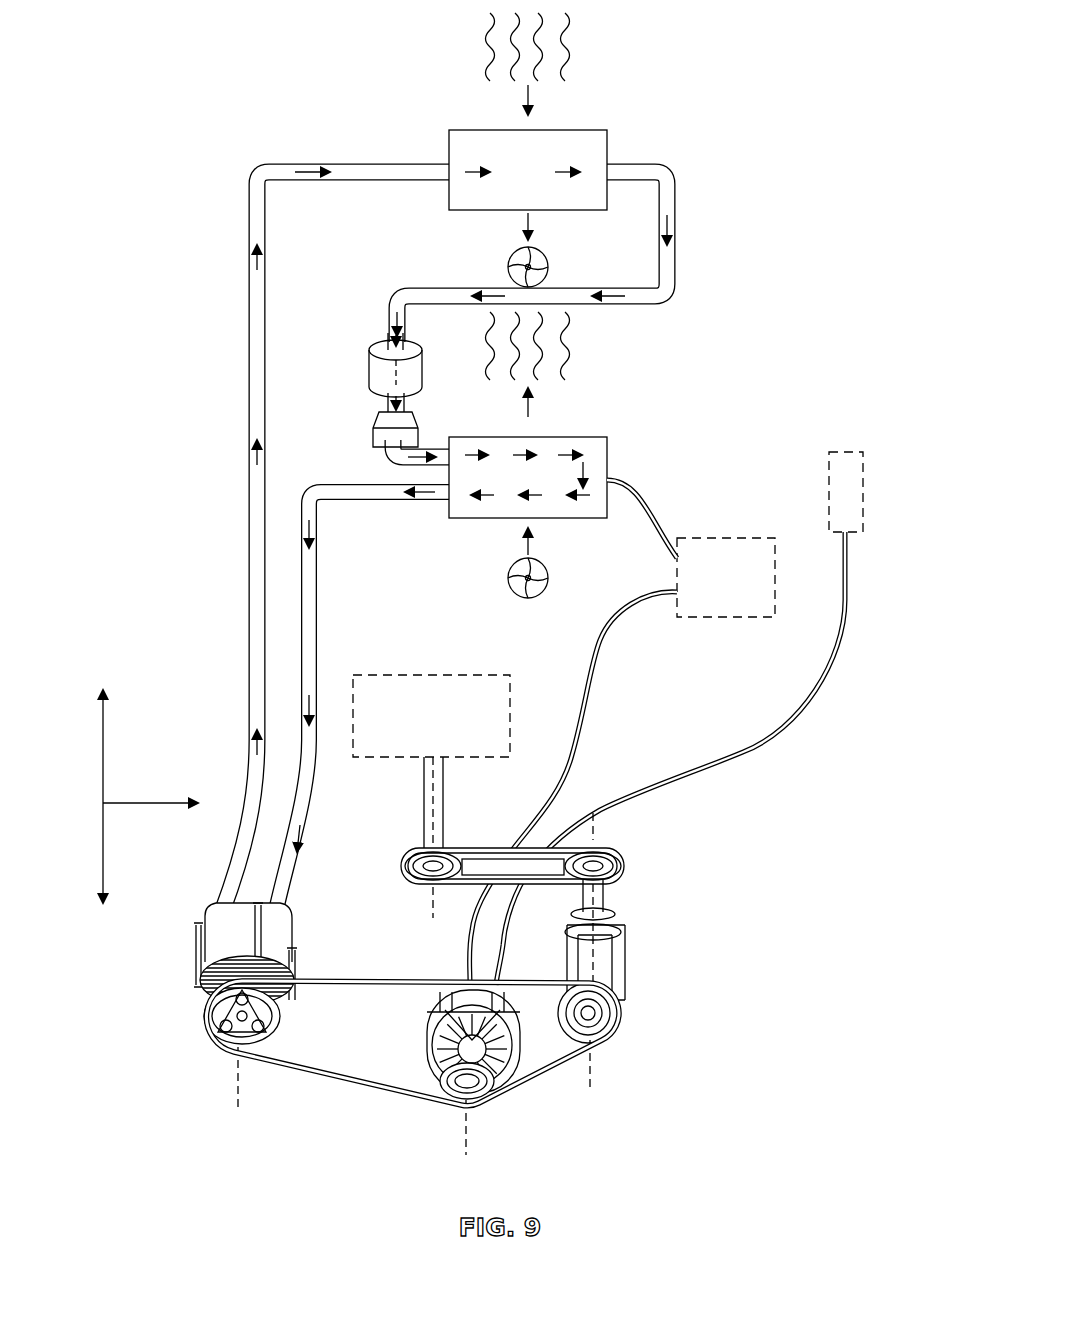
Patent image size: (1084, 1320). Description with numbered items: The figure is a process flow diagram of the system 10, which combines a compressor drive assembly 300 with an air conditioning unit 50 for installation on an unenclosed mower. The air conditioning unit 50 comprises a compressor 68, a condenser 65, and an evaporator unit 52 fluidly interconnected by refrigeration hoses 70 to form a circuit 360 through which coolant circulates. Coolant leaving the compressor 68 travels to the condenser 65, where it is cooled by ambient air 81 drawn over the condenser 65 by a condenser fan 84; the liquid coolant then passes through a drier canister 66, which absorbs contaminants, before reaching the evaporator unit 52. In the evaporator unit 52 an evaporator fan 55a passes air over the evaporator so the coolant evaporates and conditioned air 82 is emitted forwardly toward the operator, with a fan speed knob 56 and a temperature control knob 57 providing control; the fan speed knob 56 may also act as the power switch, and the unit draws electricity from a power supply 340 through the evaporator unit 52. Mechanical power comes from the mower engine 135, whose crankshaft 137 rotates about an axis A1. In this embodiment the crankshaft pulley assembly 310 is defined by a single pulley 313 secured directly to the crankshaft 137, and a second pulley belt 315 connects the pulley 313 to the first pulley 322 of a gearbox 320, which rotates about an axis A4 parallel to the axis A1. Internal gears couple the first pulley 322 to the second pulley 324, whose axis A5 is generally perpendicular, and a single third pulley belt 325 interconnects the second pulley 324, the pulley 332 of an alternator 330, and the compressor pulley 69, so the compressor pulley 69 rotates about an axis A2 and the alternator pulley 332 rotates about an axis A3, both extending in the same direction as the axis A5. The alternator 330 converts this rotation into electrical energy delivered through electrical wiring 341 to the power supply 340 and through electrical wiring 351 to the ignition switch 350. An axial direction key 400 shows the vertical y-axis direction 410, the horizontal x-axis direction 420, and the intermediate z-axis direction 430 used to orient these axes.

The system 10 is at (160, 92).
The air conditioning unit 50 is at (258, 147).
The circuit 360 is at (228, 290).
The refrigeration hose 70 is at (249, 355).
The condenser 65 is at (595, 130).
The ambient air 81 is at (568, 50).
The condenser fan 84 is at (508, 262).
The conditioned air 82 is at (572, 350).
The drier canister 66 is at (368, 362).
The temperature control knob 57 is at (373, 440).
The evaporator unit 52 is at (530, 437).
The evaporator fan 55a is at (467, 563).
The fan speed knob 56 is at (508, 580).
The power supply 340 is at (697, 592).
The ignition switch 350 is at (866, 478).
The electrical wiring 351 is at (848, 598).
The electrical wiring 341 is at (605, 665).
The engine 135 is at (410, 731).
The crankshaft 137 is at (424, 810).
The axis A1 is at (487, 837).
The second pulley belt 315 is at (590, 815).
The axis A4 is at (598, 830).
The crankshaft pulley assembly 310 is at (519, 873).
The first pulley 322 is at (620, 862).
The pulley 313 is at (418, 882).
The compressor drive assembly 300 is at (705, 920).
The compressor 68 is at (197, 940).
The gearbox 320 is at (627, 960).
The compressor pulley 69 is at (215, 1020).
The alternator 330 is at (425, 1020).
The second pulley 324 is at (612, 1000).
The axis A5 is at (600, 1058).
The axis A2 is at (235, 1085).
The third pulley belt 325 is at (355, 1093).
The alternator pulley 332 is at (470, 1092).
The axis A3 is at (470, 1128).
The axial direction key 400 is at (135, 762).
The y-axis direction 410 is at (105, 740).
The x-axis direction 420 is at (105, 868).
The z-axis direction 430 is at (150, 800).